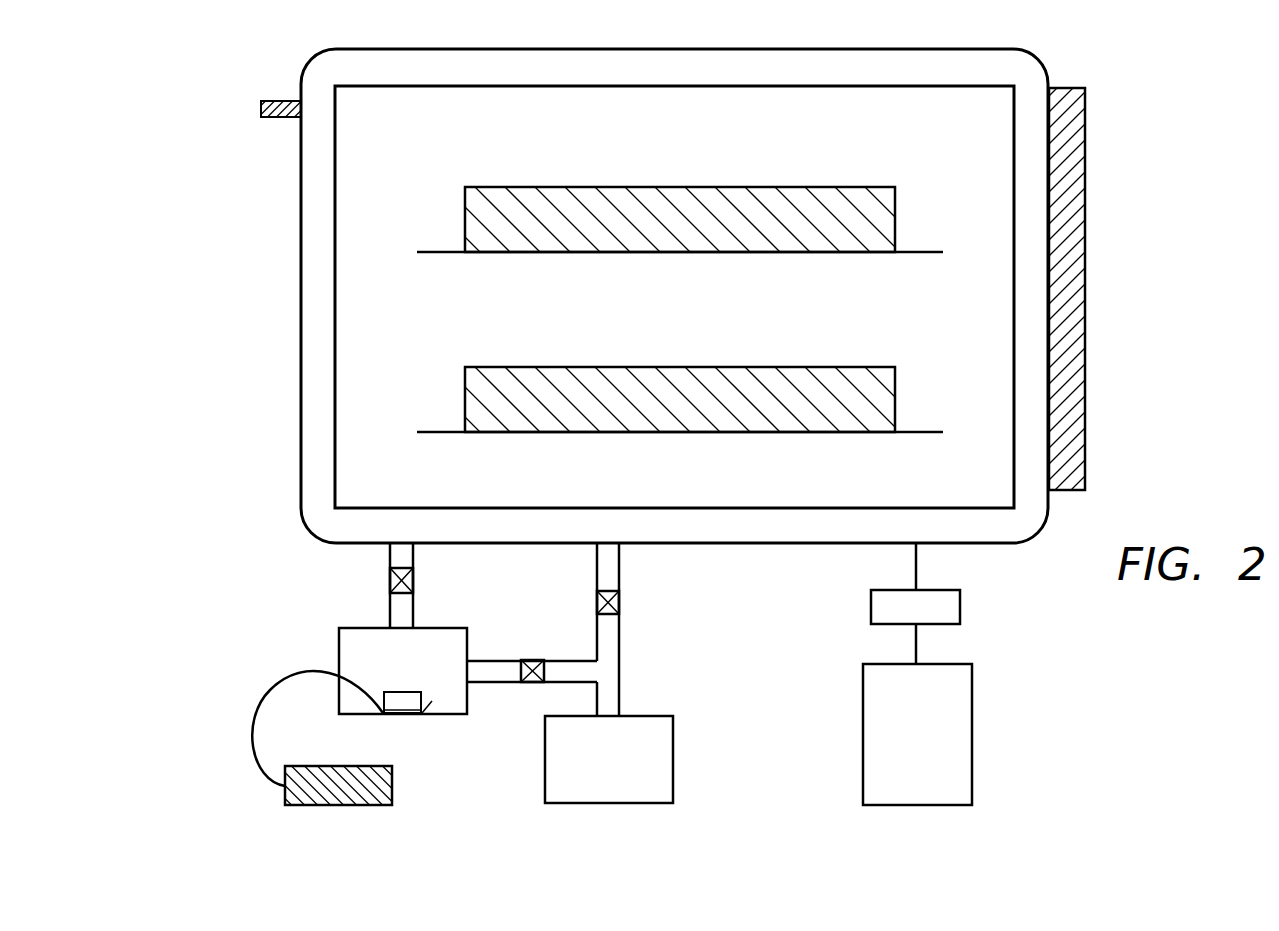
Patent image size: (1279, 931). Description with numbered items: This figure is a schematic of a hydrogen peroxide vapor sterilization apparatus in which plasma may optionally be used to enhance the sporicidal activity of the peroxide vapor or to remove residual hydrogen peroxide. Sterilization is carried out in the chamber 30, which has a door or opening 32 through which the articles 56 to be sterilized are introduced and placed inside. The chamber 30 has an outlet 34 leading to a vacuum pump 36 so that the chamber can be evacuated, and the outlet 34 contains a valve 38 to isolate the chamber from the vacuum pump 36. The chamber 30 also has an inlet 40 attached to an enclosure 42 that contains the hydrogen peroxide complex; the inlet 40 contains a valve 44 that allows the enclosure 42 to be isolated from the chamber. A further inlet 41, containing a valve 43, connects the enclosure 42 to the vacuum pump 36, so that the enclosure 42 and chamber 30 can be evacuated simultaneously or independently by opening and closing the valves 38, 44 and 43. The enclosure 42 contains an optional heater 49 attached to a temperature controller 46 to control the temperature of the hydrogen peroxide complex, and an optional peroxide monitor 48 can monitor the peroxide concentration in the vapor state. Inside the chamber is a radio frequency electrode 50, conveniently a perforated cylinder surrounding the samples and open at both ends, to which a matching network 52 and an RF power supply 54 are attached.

The chamber 30 is at (215, 284).
The door 32 is at (1085, 142).
The outlet 34 is at (622, 576).
The vacuum pump 36 is at (608, 803).
The valve 38 is at (622, 605).
The inlet 40 is at (390, 557).
The inlet 41 is at (493, 683).
The enclosure 42 is at (339, 650).
The valve 43 is at (533, 657).
The valve 44 is at (413, 587).
The temperature controller 46 is at (323, 805).
The peroxide monitor 48 is at (275, 99).
The heater 49 is at (402, 717).
The RF electrode 50 is at (540, 83).
The matching network 52 is at (960, 597).
The RF power supply 54 is at (972, 710).
The articles 56 is at (835, 182).